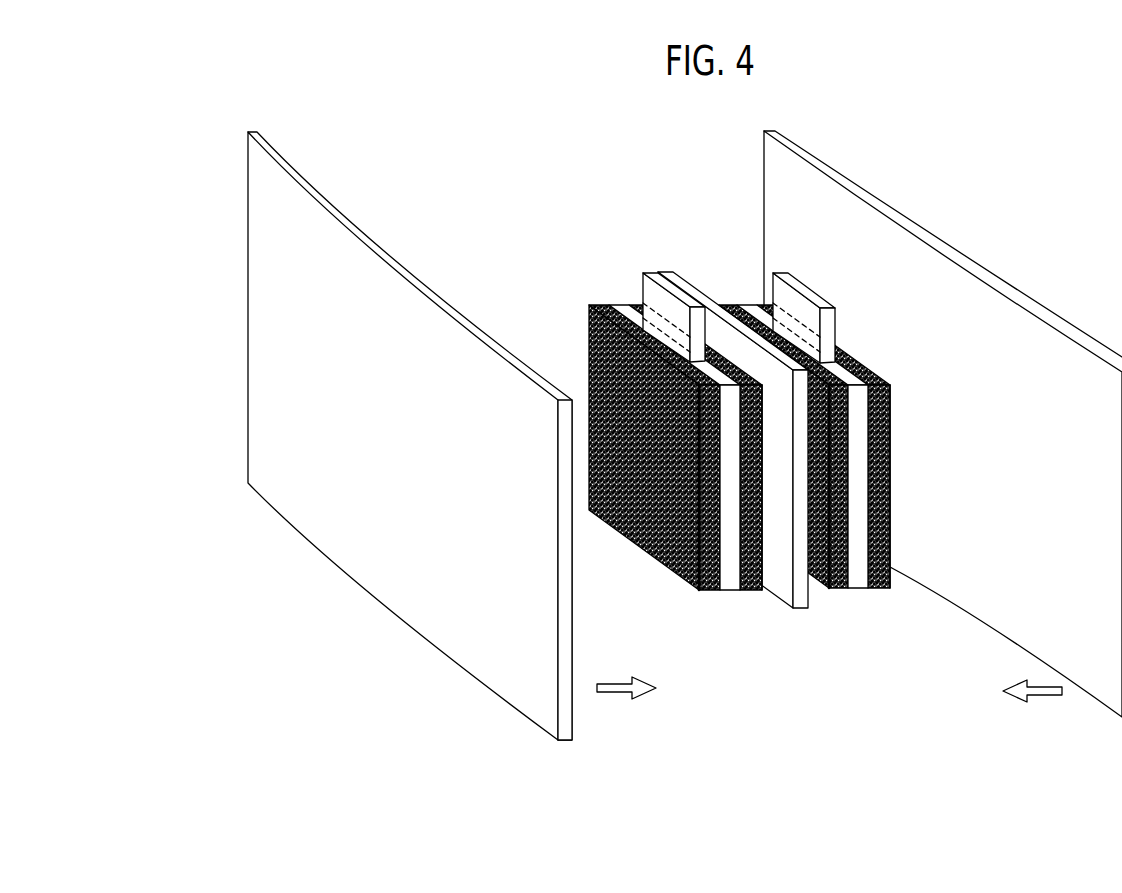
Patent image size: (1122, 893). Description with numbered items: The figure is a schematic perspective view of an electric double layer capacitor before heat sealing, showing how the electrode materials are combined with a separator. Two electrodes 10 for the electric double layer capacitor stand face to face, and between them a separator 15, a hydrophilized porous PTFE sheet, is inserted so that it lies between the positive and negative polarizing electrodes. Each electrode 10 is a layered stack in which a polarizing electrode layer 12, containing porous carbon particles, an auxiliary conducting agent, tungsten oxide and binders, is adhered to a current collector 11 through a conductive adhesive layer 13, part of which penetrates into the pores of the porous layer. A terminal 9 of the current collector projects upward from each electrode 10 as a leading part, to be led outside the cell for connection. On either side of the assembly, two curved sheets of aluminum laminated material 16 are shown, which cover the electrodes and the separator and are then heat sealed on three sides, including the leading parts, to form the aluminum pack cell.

The terminal of current collector 9 is at (645, 294).
The electrode for electric double layer capacitor 10 is at (788, 484).
The current collector 11 is at (729, 591).
The polarizing electrode layer 12 is at (700, 591).
The conductive adhesive layer 13 is at (710, 591).
The separator 15 is at (783, 600).
The aluminum laminated material 16 is at (557, 742).